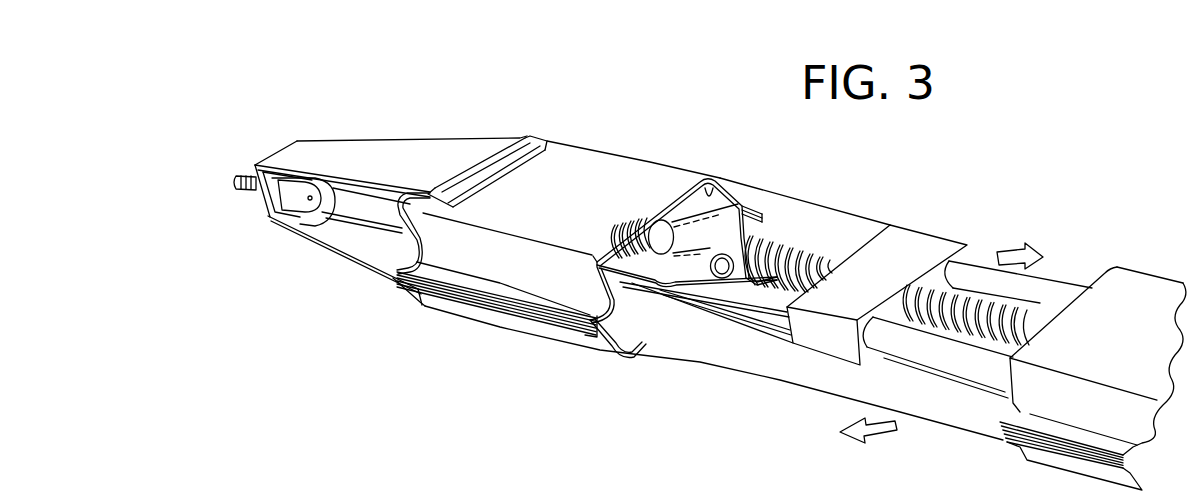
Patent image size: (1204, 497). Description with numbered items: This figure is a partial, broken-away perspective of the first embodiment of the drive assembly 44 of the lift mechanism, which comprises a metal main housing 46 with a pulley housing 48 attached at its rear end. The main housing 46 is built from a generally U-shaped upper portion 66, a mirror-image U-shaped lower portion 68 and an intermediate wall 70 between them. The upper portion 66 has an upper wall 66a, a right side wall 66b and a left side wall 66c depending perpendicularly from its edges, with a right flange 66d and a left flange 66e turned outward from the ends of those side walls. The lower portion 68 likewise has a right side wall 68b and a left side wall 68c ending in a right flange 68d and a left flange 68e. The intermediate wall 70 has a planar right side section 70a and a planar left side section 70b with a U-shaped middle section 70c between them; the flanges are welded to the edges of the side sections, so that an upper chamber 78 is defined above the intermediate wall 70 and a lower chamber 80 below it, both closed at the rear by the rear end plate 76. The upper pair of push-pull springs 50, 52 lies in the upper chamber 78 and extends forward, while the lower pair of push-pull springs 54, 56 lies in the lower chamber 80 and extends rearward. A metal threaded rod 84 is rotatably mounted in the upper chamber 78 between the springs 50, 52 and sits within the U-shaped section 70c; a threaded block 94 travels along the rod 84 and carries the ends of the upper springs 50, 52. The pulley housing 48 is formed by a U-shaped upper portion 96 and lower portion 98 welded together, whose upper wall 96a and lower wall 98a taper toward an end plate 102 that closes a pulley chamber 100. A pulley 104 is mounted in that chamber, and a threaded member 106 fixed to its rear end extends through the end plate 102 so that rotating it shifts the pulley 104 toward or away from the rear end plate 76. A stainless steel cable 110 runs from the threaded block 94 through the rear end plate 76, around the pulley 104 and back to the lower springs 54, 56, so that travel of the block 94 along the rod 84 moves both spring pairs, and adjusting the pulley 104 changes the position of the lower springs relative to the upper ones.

The drive assembly 44 is at (1114, 158).
The main housing 46 is at (1160, 275).
The pulley housing 48 is at (402, 139).
The push-pull spring 50 is at (960, 360).
The push-pull spring 52 is at (1055, 281).
The push-pull spring 54 is at (823, 383).
The push-pull spring 56 is at (762, 246).
The upper portion 66 is at (596, 242).
The upper wall 66a is at (592, 162).
The right side wall 66b is at (730, 190).
The left side wall 66c is at (568, 272).
The right flange 66d is at (750, 205).
The left flange 66e is at (575, 306).
The lower portion 68 is at (714, 300).
The right side wall 68b is at (752, 233).
The left side wall 68c is at (500, 313).
The right flange 68d is at (762, 207).
The left flange 68e is at (590, 348).
The intermediate wall 70 is at (670, 323).
The right side section 70a is at (702, 208).
The left side section 70b is at (607, 280).
The U-shaped middle section 70c is at (707, 303).
The rear end plate 76 is at (403, 252).
The upper chamber 78 is at (704, 185).
The lower chamber 80 is at (633, 360).
The threaded rod 84 is at (975, 290).
The threaded block 94 is at (920, 240).
The upper portion 96 is at (350, 158).
The upper wall 96a is at (460, 153).
The lower portion 98 is at (342, 257).
The lower wall 98a is at (390, 280).
The pulley chamber 100 is at (300, 222).
The end plate 102 is at (262, 200).
The pulley 104 is at (298, 238).
The threaded member 106 is at (236, 180).
The cable 110 is at (857, 235).